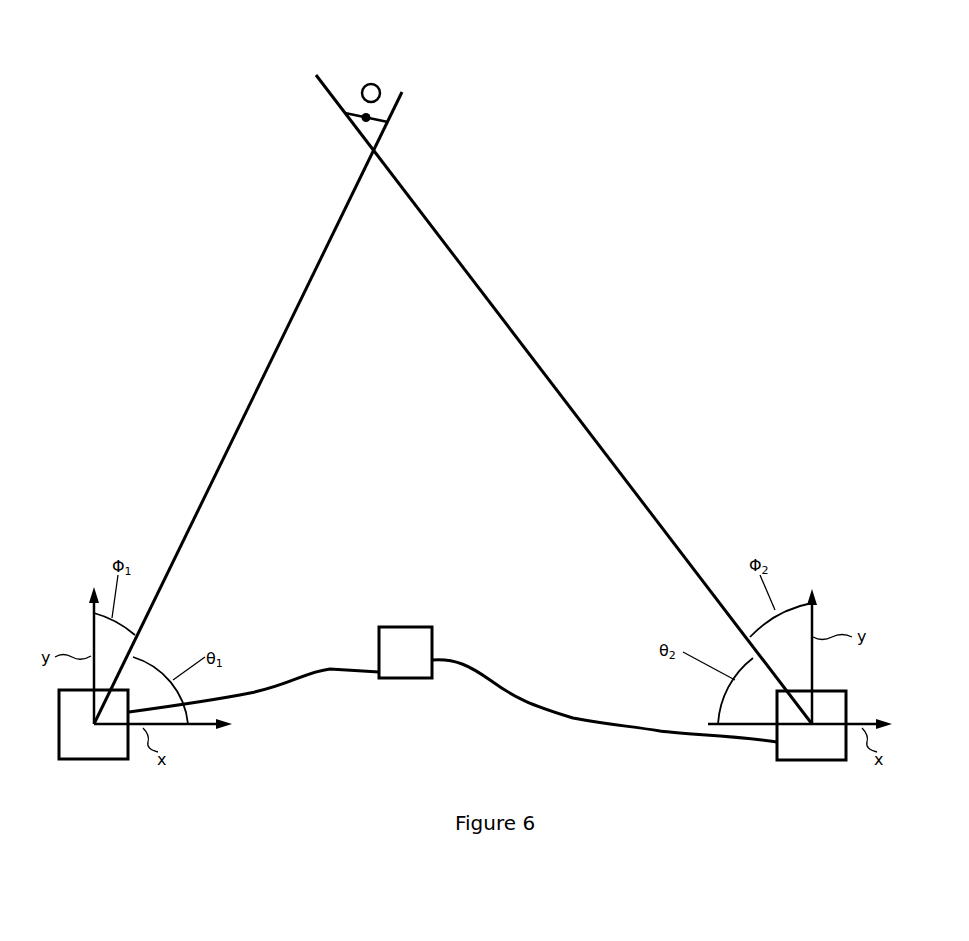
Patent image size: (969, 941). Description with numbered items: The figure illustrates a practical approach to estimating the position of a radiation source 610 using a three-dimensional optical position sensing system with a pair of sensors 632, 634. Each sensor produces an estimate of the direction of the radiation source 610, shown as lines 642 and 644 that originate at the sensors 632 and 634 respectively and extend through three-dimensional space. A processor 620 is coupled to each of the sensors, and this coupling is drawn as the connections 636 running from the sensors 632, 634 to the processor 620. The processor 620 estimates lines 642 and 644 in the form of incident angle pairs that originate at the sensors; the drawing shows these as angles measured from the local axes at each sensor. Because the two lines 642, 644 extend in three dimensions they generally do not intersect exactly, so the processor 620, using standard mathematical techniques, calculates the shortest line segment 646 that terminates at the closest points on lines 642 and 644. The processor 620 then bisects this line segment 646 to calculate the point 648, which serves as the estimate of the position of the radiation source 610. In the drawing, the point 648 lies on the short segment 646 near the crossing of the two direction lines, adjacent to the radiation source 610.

The radiation source 610 is at (372, 84).
The processor 620 is at (396, 627).
The sensor 632 is at (87, 745).
The sensor 634 is at (805, 744).
The communication link 636 is at (325, 672).
The line 642 is at (265, 365).
The line 644 is at (573, 408).
The line segment 646 is at (348, 116).
The point 648 is at (363, 115).